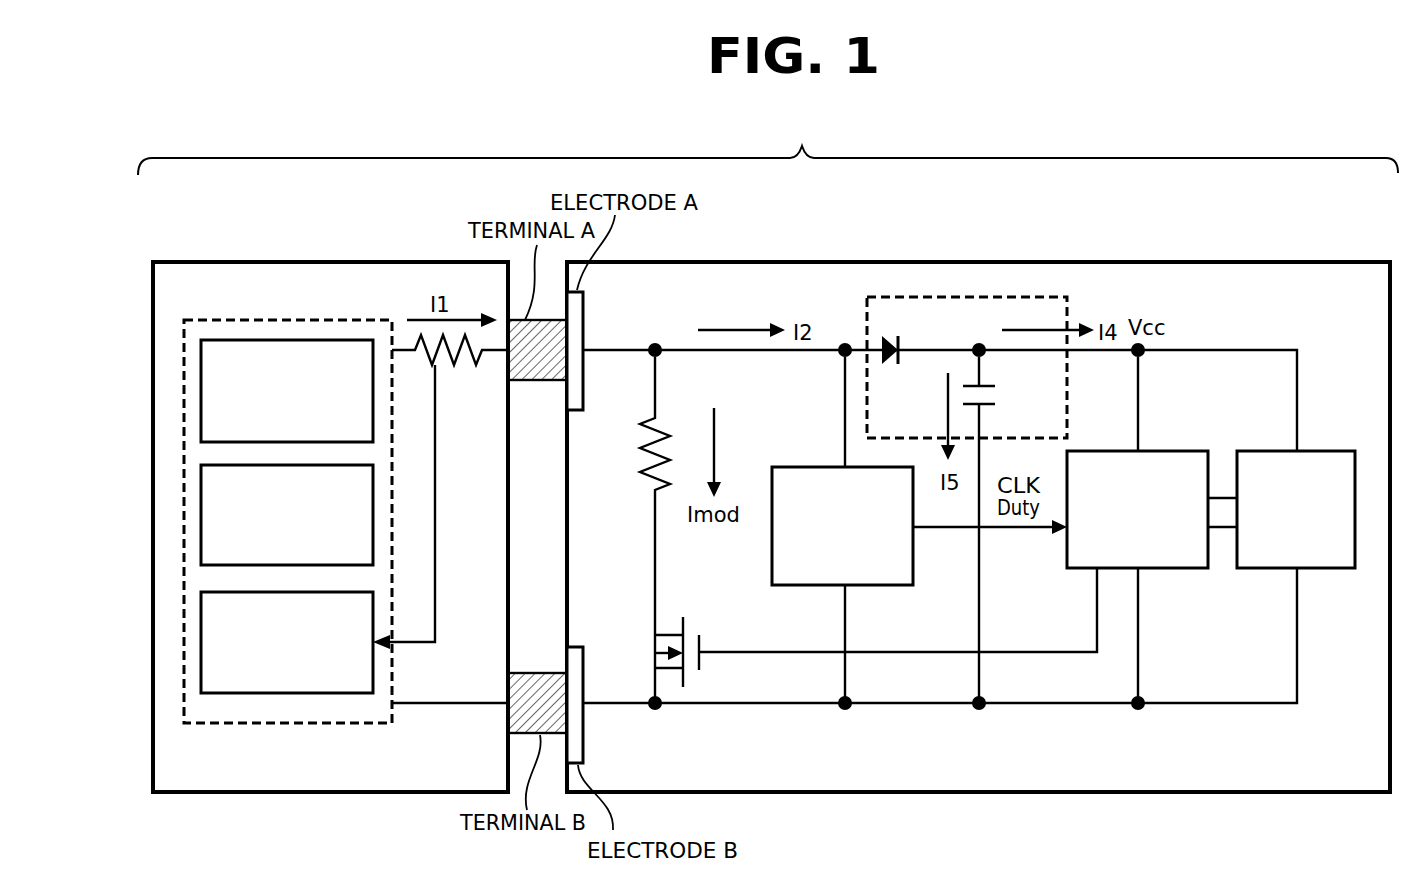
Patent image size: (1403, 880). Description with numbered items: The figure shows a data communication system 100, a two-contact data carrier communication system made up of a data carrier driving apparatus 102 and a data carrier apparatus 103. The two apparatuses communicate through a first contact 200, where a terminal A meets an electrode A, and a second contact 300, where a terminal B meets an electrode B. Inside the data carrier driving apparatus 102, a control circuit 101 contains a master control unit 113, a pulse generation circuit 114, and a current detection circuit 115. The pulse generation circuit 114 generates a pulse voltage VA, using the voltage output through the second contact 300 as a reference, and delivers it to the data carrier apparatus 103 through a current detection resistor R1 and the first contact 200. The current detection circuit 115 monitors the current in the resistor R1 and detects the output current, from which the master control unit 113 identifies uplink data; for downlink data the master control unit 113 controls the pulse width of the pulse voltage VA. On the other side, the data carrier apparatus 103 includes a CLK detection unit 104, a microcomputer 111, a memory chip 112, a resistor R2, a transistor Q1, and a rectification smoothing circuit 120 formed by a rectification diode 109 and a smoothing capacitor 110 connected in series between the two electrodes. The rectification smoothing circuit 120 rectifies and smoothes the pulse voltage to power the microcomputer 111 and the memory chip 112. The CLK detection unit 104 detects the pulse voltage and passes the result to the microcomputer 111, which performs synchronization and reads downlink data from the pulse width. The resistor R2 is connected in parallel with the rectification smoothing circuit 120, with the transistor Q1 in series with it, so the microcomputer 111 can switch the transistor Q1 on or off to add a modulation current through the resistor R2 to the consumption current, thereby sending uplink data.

The data communication system 100 is at (768, 144).
The control circuit 101 is at (243, 320).
The data carrier driving apparatus 102 is at (285, 262).
The data carrier apparatus 103 is at (1195, 262).
The CLK detection unit 104 is at (883, 587).
The rectification diode 109 is at (890, 335).
The smoothing capacitor 110 is at (1000, 397).
The microcomputer 111 is at (1177, 570).
The memory chip 112 is at (1330, 570).
The master control unit 113 is at (201, 403).
The pulse generation circuit 114 is at (201, 520).
The current detection circuit 115 is at (201, 643).
The rectification smoothing circuit 120 is at (990, 298).
The first contact 200 is at (565, 382).
The second contact 300 is at (565, 668).
The current detection resistor R1 is at (465, 370).
The resistor R2 is at (640, 480).
The transistor Q1 is at (703, 640).